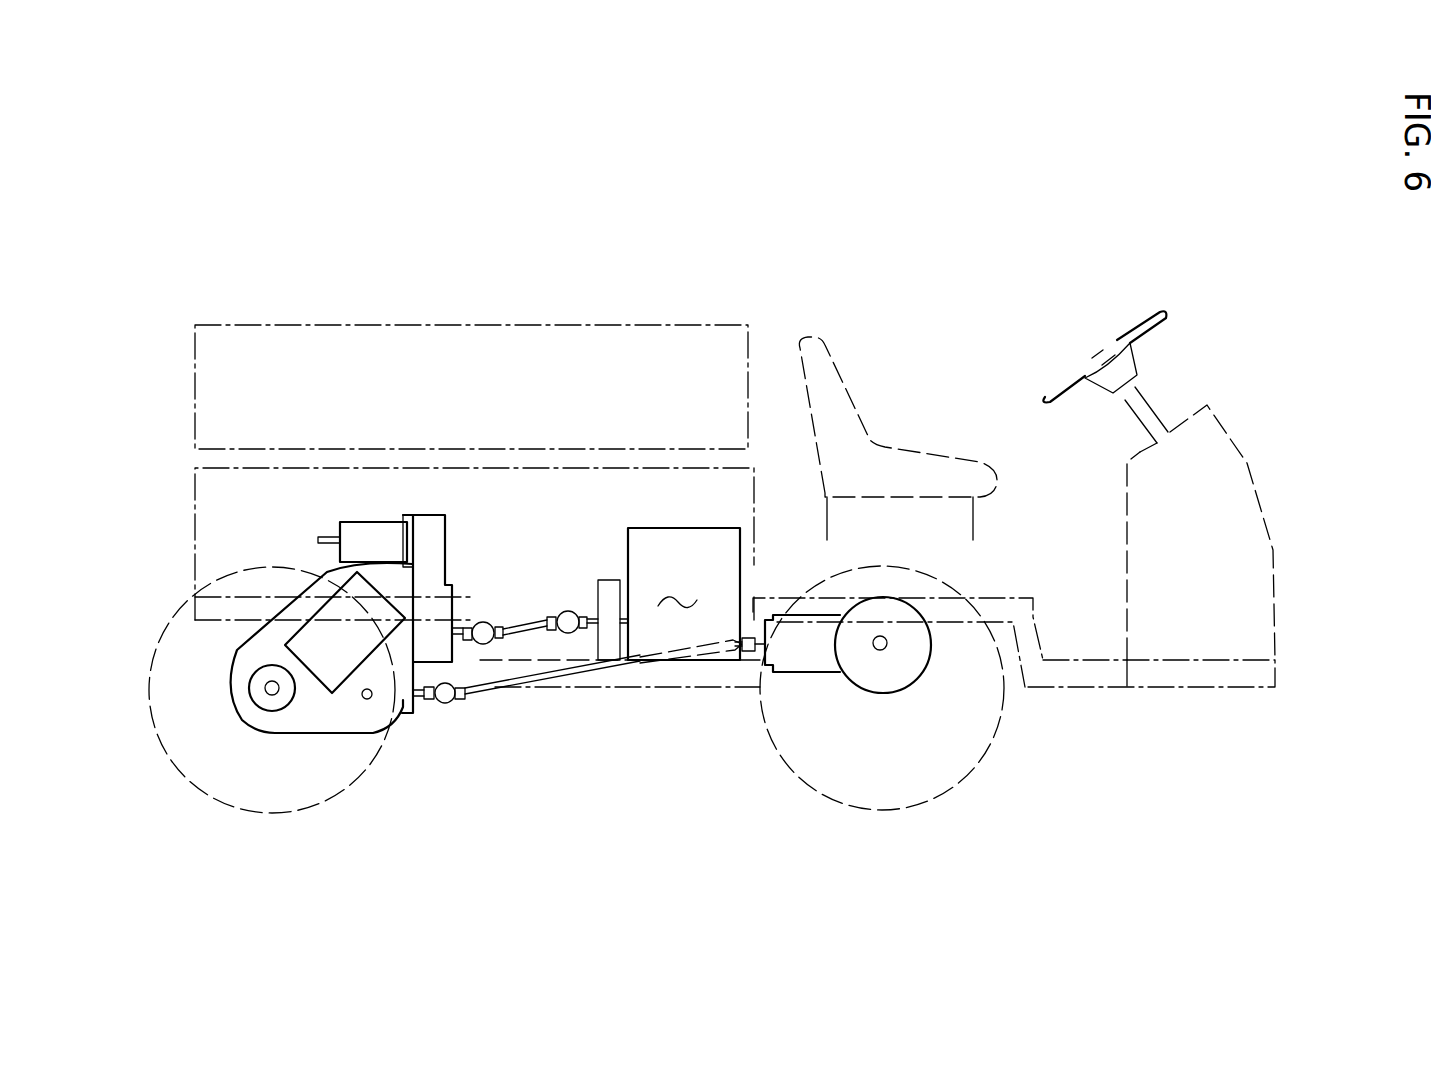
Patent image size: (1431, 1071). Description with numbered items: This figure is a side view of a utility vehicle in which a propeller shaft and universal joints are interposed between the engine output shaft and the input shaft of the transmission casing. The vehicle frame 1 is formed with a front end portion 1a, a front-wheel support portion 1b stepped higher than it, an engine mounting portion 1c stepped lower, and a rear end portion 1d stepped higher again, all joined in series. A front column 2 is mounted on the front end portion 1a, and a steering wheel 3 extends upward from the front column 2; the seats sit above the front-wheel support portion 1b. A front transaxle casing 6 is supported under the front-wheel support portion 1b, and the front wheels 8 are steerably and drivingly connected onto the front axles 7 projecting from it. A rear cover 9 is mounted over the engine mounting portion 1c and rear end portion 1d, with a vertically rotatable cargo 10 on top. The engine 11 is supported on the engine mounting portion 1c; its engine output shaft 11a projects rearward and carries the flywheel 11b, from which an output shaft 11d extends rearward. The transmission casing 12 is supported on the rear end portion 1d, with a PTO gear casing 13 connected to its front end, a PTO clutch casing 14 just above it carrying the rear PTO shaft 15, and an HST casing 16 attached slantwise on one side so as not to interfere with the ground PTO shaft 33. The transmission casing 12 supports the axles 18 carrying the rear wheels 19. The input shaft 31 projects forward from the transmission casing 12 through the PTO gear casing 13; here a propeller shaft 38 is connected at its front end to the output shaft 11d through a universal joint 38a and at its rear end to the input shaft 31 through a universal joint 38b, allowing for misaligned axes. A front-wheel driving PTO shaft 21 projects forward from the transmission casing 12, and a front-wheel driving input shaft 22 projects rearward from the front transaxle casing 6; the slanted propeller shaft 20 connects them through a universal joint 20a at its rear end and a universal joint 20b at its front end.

The vehicle frame 1 is at (1277, 670).
The front end portion 1a is at (1127, 693).
The front-wheel support portion 1b is at (987, 597).
The engine mounting portion 1c is at (680, 687).
The rear end portion 1d is at (240, 597).
The front column 2 is at (1233, 437).
The steering wheel 3 is at (1148, 310).
The front transaxle casing 6 is at (850, 668).
The front axle 7 is at (888, 648).
The front wheel 8 is at (970, 775).
The rear cover 9 is at (195, 498).
The cargo 10 is at (588, 325).
The engine 11 is at (684, 594).
The engine output shaft 11a is at (625, 662).
The flywheel 11b is at (610, 580).
The output shaft 11d is at (592, 597).
The transmission casing 12 is at (235, 714).
The PTO gear casing 13 is at (430, 515).
The PTO clutch casing 14 is at (378, 530).
The rear PTO shaft 15 is at (317, 539).
The HST casing 16 is at (325, 647).
The axle 18 is at (272, 687).
The rear wheel 19 is at (212, 796).
The propeller shaft 20 is at (590, 672).
The universal joint 20a is at (444, 704).
The universal joint 20b is at (725, 690).
The front-wheel driving PTO shaft 21 is at (417, 702).
The front-wheel driving input shaft 22 is at (745, 660).
The input shaft 31 is at (456, 620).
The ground PTO shaft 33 is at (364, 699).
The propeller shaft 38 is at (525, 618).
The universal joint 38a is at (568, 615).
The universal joint 38b is at (476, 619).